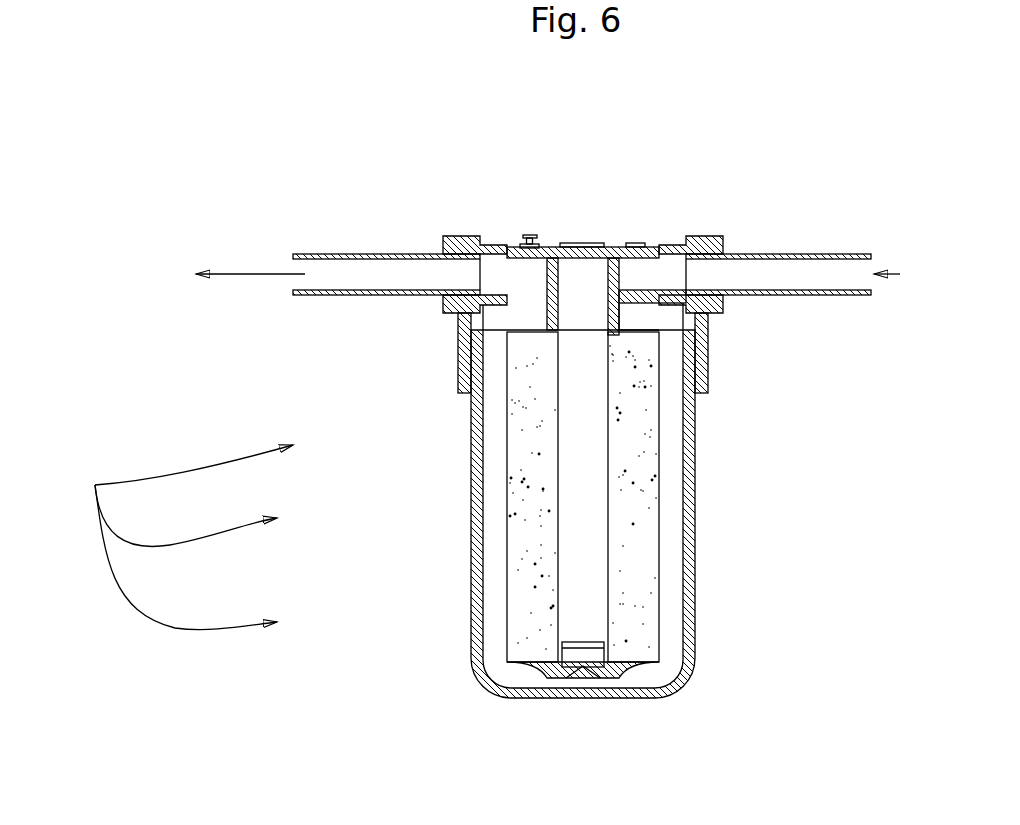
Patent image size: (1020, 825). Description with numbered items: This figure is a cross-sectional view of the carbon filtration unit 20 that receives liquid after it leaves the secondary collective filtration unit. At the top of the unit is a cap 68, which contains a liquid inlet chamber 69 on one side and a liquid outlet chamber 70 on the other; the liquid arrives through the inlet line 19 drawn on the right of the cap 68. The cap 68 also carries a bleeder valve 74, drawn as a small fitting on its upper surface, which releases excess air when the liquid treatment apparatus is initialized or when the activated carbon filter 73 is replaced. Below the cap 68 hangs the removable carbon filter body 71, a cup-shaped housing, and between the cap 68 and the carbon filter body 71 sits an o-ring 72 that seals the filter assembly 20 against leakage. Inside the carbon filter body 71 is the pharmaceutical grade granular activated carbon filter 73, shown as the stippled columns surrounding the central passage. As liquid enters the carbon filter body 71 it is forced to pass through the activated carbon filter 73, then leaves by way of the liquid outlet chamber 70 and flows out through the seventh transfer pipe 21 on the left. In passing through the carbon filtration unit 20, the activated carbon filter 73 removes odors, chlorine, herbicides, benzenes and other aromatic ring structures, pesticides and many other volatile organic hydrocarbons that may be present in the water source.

The inlet tube 19 is at (797, 253).
The carbon filtration unit 20 is at (176, 537).
The seventh transfer pipe 21 is at (356, 247).
The cap 68 is at (550, 245).
The liquid inlet chamber 69 is at (635, 273).
The liquid outlet chamber 70 is at (525, 297).
The removable carbon filter body 71 is at (697, 538).
The o-ring 72 is at (697, 343).
The activated carbon filter 73 is at (632, 582).
The bleeder valve 74 is at (528, 233).